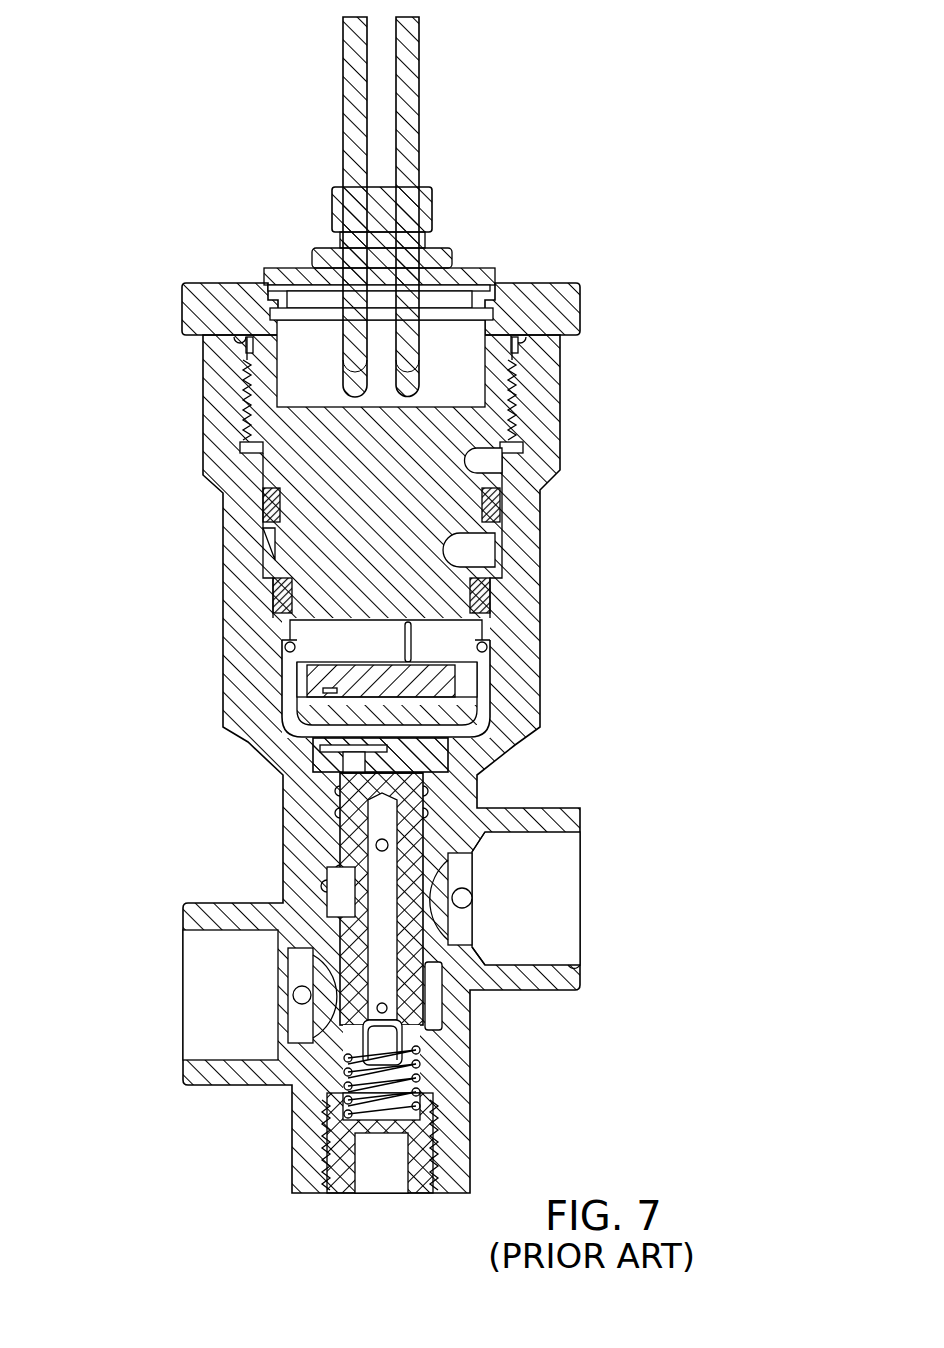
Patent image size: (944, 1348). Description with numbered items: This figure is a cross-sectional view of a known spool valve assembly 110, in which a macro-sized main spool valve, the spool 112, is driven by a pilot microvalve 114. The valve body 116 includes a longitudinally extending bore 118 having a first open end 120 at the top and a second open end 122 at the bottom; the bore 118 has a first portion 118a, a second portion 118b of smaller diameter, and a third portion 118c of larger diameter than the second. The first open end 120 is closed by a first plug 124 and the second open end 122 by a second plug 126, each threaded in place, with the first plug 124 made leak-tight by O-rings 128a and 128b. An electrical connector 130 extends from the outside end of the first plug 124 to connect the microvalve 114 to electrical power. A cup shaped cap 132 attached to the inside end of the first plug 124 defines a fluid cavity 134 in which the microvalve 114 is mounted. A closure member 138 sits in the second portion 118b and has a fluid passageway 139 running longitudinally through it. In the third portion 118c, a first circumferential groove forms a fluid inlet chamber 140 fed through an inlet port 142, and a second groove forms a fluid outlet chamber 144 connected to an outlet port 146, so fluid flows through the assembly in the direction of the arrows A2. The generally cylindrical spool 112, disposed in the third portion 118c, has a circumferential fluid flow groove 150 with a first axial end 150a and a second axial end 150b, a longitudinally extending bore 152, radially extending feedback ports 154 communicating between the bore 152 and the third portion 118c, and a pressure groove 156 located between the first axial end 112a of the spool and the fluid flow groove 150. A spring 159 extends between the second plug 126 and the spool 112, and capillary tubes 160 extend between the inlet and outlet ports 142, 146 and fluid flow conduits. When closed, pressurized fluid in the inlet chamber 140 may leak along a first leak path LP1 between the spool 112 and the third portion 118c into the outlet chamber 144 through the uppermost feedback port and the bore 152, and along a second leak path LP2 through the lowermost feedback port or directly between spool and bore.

The spool valve assembly 110 is at (176, 145).
The spool 112 is at (330, 824).
The first axial end of the spool 112a is at (343, 797).
The pilot microvalve 114 is at (442, 673).
The valve body 116 is at (215, 398).
The longitudinally extending bore 118 is at (510, 442).
The first portion of the bore 118a is at (282, 660).
The second portion of the bore 118b is at (318, 745).
The third portion of the bore 118c is at (338, 967).
The first open end 120 is at (500, 273).
The second open end 122 is at (433, 1175).
The first plug 124 is at (188, 302).
The second plug 126 is at (340, 1193).
The O-ring 128a is at (490, 587).
The O-ring 128b is at (502, 493).
The electrical connector 130 is at (332, 210).
The cup shaped cap 132 is at (288, 690).
The fluid cavity 134 is at (462, 690).
The closure member 138 is at (445, 760).
The fluid passageway 139 is at (340, 772).
The fluid inlet chamber 140 is at (338, 870).
The inlet port 142 is at (578, 962).
The fluid outlet chamber 144 is at (437, 1017).
The outlet port 146 is at (188, 1062).
The fluid flow groove 150 is at (450, 890).
The first axial end of the fluid flow groove 150a is at (485, 868).
The second axial end of the fluid flow groove 150b is at (350, 908).
The longitudinally extending bore of the spool 152 is at (362, 848).
The feedback ports 154 is at (405, 838).
The pressure groove 156 is at (386, 845).
The spring 159 is at (413, 1070).
The capillary tubes 160 is at (300, 1003).
The first leak path LP1 is at (490, 838).
The second leak path LP2 is at (485, 950).
The arrows A2 is at (568, 906).